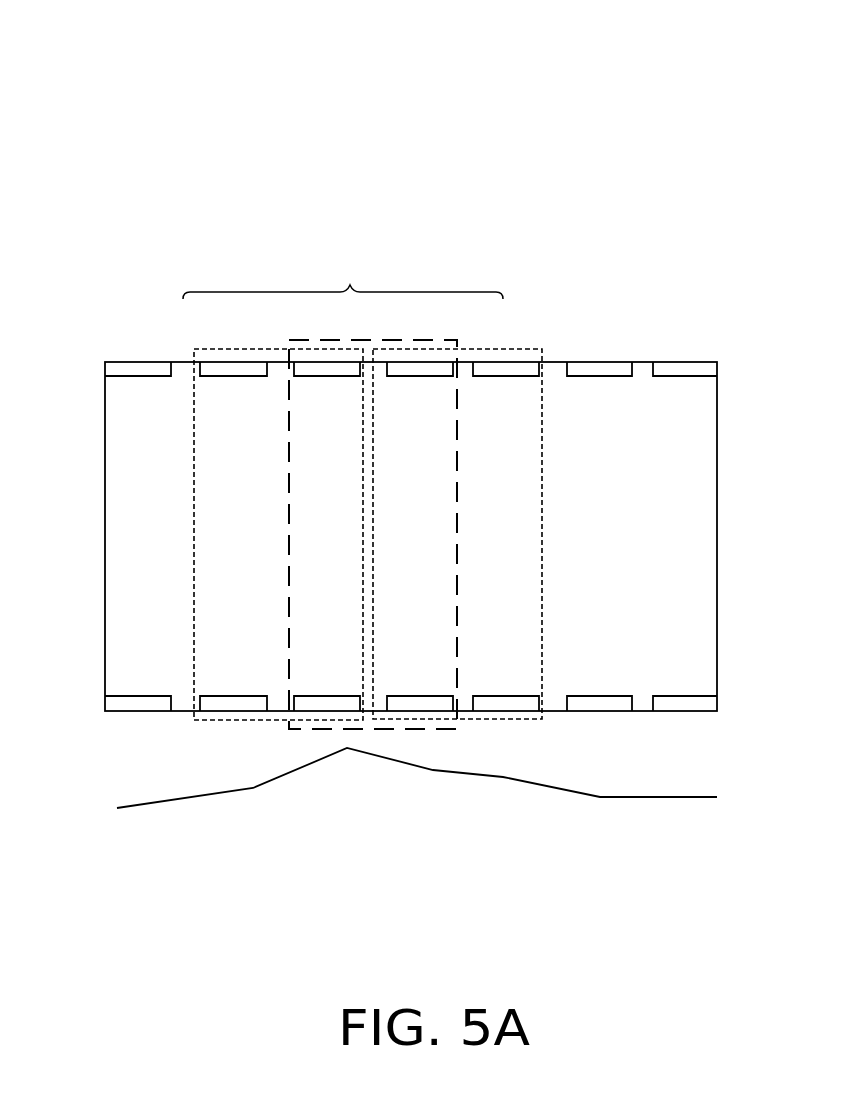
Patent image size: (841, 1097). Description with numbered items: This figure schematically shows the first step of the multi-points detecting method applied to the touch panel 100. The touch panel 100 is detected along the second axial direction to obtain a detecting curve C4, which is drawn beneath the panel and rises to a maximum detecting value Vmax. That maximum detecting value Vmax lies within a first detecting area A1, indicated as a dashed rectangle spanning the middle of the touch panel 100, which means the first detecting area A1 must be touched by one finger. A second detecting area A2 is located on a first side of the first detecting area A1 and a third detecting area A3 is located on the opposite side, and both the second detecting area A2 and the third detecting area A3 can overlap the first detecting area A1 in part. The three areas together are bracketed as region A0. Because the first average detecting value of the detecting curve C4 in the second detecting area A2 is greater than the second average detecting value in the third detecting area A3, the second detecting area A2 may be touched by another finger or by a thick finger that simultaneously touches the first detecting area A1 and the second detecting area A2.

The touch panel 100 is at (556, 95).
The overall sensing region A0 is at (343, 278).
The first detecting area A1 is at (391, 338).
The second detecting area A2 is at (520, 348).
The third detecting area A3 is at (260, 348).
The detecting curve C4 is at (697, 797).
The maximum detecting value Vmax is at (344, 775).